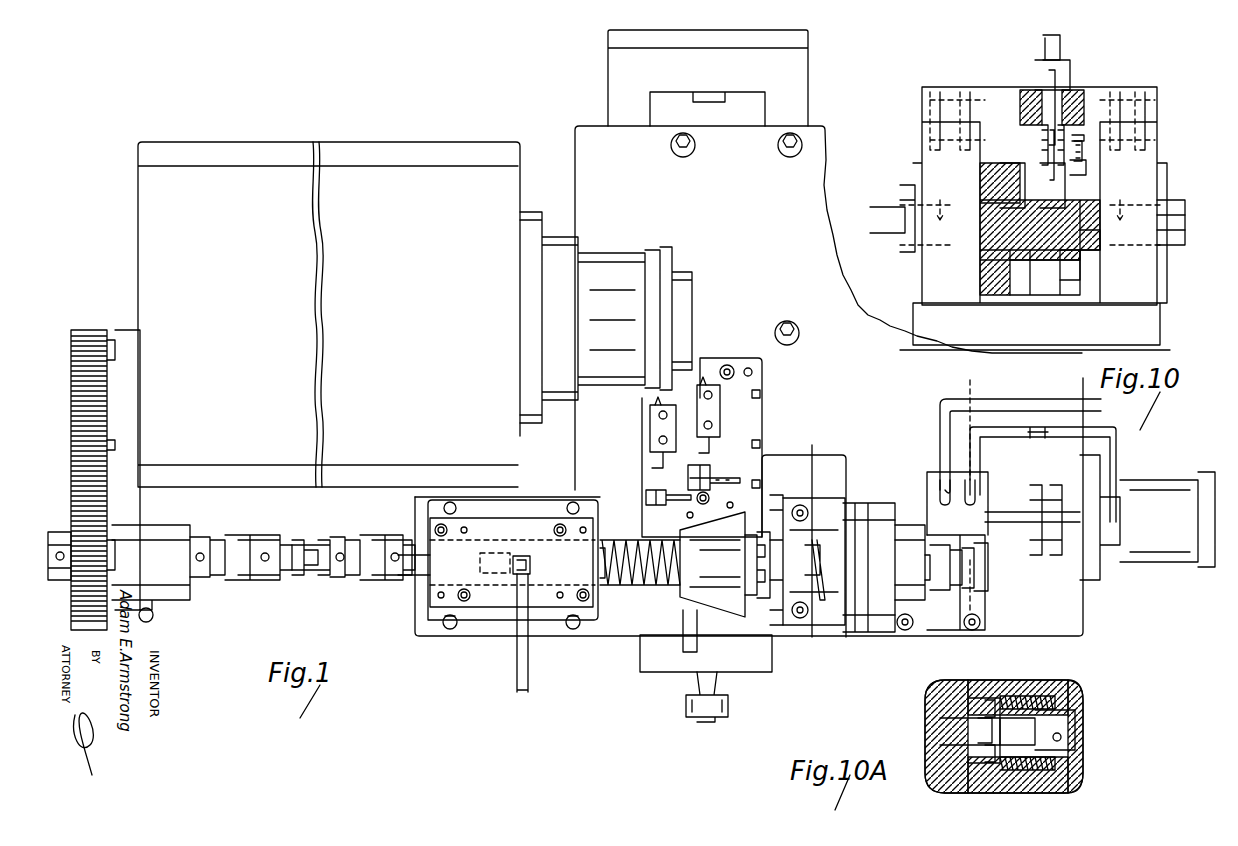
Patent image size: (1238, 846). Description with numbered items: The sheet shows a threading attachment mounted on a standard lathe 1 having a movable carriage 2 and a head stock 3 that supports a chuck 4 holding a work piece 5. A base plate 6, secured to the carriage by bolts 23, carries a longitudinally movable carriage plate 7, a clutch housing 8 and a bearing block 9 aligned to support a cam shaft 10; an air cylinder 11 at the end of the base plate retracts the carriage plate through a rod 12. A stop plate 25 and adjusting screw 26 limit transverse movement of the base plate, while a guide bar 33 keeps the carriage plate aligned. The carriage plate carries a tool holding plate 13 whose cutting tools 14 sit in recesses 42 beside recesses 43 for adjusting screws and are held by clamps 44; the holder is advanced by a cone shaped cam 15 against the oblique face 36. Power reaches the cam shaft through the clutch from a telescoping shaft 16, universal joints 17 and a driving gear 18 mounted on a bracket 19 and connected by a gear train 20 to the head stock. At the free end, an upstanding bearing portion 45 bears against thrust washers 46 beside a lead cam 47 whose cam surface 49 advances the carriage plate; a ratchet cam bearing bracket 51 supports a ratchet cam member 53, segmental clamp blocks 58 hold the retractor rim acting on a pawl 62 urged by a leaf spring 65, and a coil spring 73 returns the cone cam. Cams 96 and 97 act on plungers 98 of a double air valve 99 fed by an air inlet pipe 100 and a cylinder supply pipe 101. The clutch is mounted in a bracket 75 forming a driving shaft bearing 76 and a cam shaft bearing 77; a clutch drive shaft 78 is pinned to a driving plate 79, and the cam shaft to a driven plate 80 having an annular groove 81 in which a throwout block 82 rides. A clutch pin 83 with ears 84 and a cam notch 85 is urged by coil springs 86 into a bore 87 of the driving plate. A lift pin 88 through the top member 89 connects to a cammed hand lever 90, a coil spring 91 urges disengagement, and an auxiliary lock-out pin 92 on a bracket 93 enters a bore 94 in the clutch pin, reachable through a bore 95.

In FIG. 1, the lathe 1 is at (555, 160).
In FIG. 1, the carriage 2 is at (608, 71).
In FIG. 1, the head stock 3 is at (425, 200).
In FIG. 1, the chuck 4 is at (597, 264).
In FIG. 1, the work piece 5 is at (668, 264).
In FIG. 1, the base plate 6 is at (814, 172).
In FIG. 1, the carriage plate 7 is at (835, 470).
In FIG. 1, the clutch housing 8 is at (562, 502).
In FIG. 1, the bearing block 9 is at (945, 628).
In FIG. 1, the cam shaft 10 is at (630, 520).
In FIG. 10, the cam shaft 10 is at (1170, 213).
In FIG. 1, the air cylinder 11 is at (1160, 545).
In FIG. 1, the rod 12 is at (1000, 512).
In FIG. 1, the tool holding plate 13 is at (754, 432).
In FIG. 1, the cutting tools 14 is at (704, 378).
In FIG. 1, the cone shaped cam 15 is at (700, 572).
In FIG. 1, the telescoping shaft 16 is at (305, 543).
In FIG. 1, the universal joints 17 is at (242, 543).
In FIG. 1, the driving gear 18 is at (101, 515).
In FIG. 1, the bracket 19 is at (136, 448).
In FIG. 1, the gear train 20 is at (116, 415).
In FIG. 1, the bolts 23 is at (803, 142).
In FIG. 1, the stop plate 25 is at (747, 660).
In FIG. 1, the adjusting screw 26 is at (730, 706).
In FIG. 1, the guide bar 33 is at (754, 372).
In FIG. 1, the beveled forward face 36 is at (715, 512).
In FIG. 1, the recesses 42 is at (650, 465).
In FIG. 1, the recesses for adjusting screws 43 is at (687, 478).
In FIG. 1, the clamps 44 is at (718, 404).
In FIG. 1, the upstanding bearing portion 45 is at (887, 500).
In FIG. 1, the thrust washers 46 is at (867, 502).
In FIG. 1, the lead cam 47 is at (845, 615).
In FIG. 1, the cam surface 49 is at (800, 618).
In FIG. 1, the ratchet cam bearing bracket 51 is at (810, 513).
In FIG. 1, the ratchet cam member 53 is at (748, 602).
In FIG. 1, the segmental clamp blocks 58 is at (772, 508).
In FIG. 1, the pawl 62 is at (737, 598).
In FIG. 1, the leaf spring 65 is at (738, 563).
In FIG. 1, the coil spring 73 is at (625, 580).
In FIG. 10, the bracket 75 is at (922, 148).
In FIG. 10, the driving shaft bearing 76 is at (915, 253).
In FIG. 10, the cam shaft bearing 77 is at (1137, 250).
In FIG. 1, the clutch drive shaft 78 is at (478, 580).
In FIG. 10, the clutch drive shaft 78 is at (958, 245).
In FIG. 10, the driving plate 79 is at (1025, 168).
In FIG. 10A, the driving plate 79 is at (938, 688).
In FIG. 10, the driven plate 80 is at (1085, 280).
In FIG. 10A, the driven plate 80 is at (1038, 680).
In FIG. 10, the annular groove 81 is at (1053, 275).
In FIG. 10, the throwout block 82 is at (1100, 248).
In FIG. 10, the clutch pin 83 is at (1005, 167).
In FIG. 10A, the clutch pin 83 is at (975, 728).
In FIG. 10A, the ears 84 is at (993, 694).
In FIG. 10A, the cam notch 85 is at (1050, 727).
In FIG. 10A, the coil springs 86 is at (1055, 685).
In FIG. 10A, the bore 87 is at (940, 745).
In FIG. 1, the lift pin 88 is at (522, 556).
In FIG. 10, the lift pin 88 is at (1046, 76).
In FIG. 1, the top member 89 is at (500, 532).
In FIG. 10, the top member 89 is at (947, 90).
In FIG. 1, the cammed hand lever 90 is at (528, 660).
In FIG. 10, the cammed hand lever 90 is at (1060, 45).
In FIG. 10, the coil spring 91 is at (1040, 133).
In FIG. 10, the auxiliary lock-out pin 92 is at (1088, 136).
In FIG. 10, the bracket 93 is at (1083, 155).
In FIG. 10, the bore 94 is at (1088, 175).
In FIG. 10A, the bore 94 is at (1062, 740).
In FIG. 10, the bore 95 is at (1085, 77).
In FIG. 1, the air control cam 96 is at (946, 590).
In FIG. 1, the air exhaust cam 97 is at (976, 590).
In FIG. 1, the plungers 98 is at (963, 545).
In FIG. 1, the double air valve 99 is at (985, 495).
In FIG. 1, the air inlet pipe 100 is at (940, 412).
In FIG. 1, the cylinder supply pipe 101 is at (1120, 434).